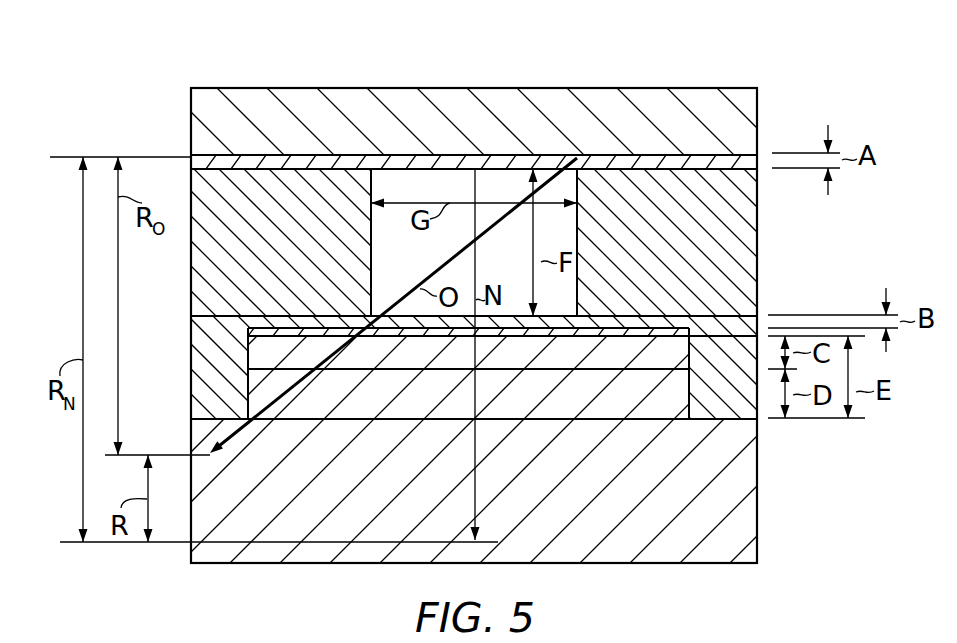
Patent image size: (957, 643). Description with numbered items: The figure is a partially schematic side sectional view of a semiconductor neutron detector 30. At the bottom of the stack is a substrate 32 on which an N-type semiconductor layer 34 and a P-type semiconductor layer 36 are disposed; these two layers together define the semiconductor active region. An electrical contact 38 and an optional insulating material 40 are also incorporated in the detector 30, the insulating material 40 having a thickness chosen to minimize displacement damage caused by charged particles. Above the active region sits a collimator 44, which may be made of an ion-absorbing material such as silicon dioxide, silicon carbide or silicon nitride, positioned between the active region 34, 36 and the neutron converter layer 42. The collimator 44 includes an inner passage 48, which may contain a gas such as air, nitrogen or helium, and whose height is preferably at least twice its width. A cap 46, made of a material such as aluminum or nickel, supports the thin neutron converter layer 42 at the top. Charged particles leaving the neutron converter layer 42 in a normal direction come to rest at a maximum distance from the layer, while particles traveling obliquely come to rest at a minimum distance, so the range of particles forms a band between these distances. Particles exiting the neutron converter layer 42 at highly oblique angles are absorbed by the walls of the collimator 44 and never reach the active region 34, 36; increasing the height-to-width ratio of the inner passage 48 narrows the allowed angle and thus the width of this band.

The semiconductor detector 30 is at (137, 100).
The substrate 32 is at (200, 518).
The N-type semiconductor layer 34 is at (235, 397).
The P-type semiconductor layer 36 is at (258, 390).
The electrical contact 38 is at (240, 326).
The insulating material 40 is at (240, 352).
The neutron converter layer 42 is at (191, 157).
The collimator 44 is at (220, 252).
The cap 46 is at (423, 88).
The inner passage 48 is at (409, 271).